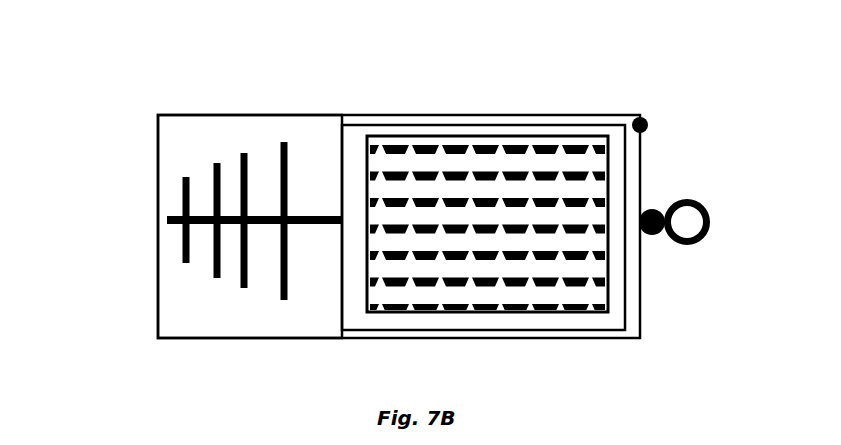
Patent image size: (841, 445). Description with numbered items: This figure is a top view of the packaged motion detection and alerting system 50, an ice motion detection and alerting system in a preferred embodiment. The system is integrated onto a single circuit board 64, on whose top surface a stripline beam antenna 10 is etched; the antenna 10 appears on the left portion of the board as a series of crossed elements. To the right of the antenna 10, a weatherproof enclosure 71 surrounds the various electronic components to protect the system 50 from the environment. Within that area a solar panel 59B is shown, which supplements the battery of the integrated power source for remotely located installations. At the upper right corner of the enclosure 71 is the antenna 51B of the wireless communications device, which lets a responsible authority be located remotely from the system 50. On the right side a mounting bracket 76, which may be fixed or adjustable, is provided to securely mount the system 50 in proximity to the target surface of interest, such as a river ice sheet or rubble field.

The motion detection and alerting system 50 is at (128, 95).
The antenna 10 is at (228, 168).
The weatherproof enclosure 71 is at (343, 124).
The solar panel 59B is at (463, 147).
The antenna 51B is at (642, 116).
The mounting bracket 76 is at (705, 200).
The circuit board 64 is at (158, 286).